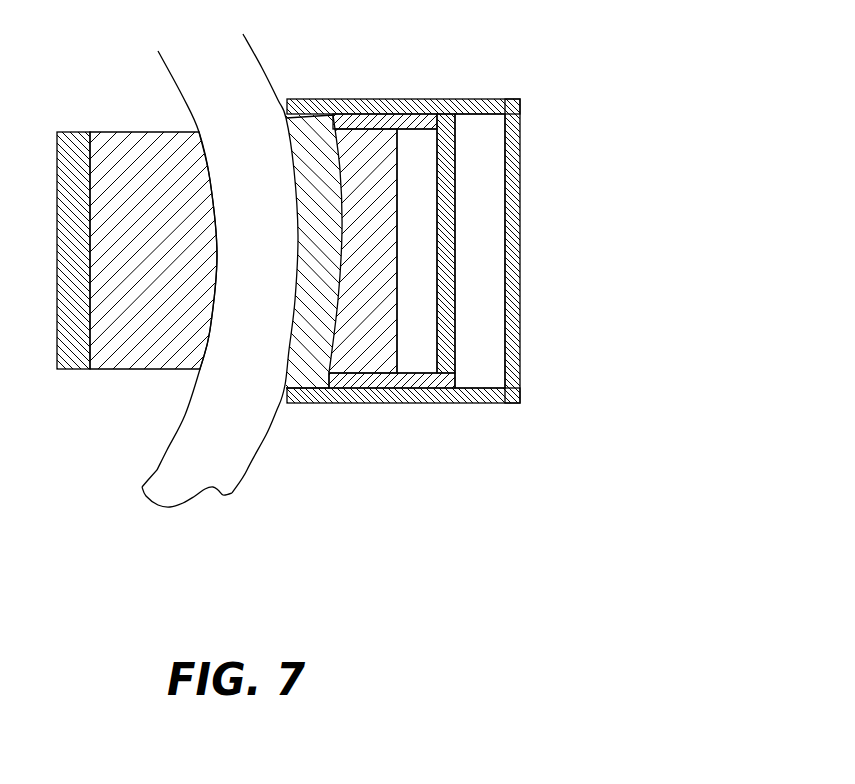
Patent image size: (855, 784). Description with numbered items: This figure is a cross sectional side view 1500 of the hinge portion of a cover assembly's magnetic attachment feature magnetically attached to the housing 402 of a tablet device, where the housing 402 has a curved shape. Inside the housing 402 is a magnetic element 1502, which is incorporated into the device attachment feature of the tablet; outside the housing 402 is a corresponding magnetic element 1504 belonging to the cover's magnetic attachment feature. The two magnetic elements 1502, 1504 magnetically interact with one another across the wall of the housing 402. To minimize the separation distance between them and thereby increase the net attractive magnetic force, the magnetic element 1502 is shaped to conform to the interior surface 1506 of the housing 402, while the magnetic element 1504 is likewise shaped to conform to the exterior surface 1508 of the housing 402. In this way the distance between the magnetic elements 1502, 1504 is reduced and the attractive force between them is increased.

The cross sectional side view 1500 is at (642, 88).
The magnetic element 1502 is at (121, 138).
The housing 402 is at (225, 461).
The magnetic element 1504 is at (376, 170).
The interior surface 1506 is at (160, 452).
The exterior surface 1508 is at (233, 495).